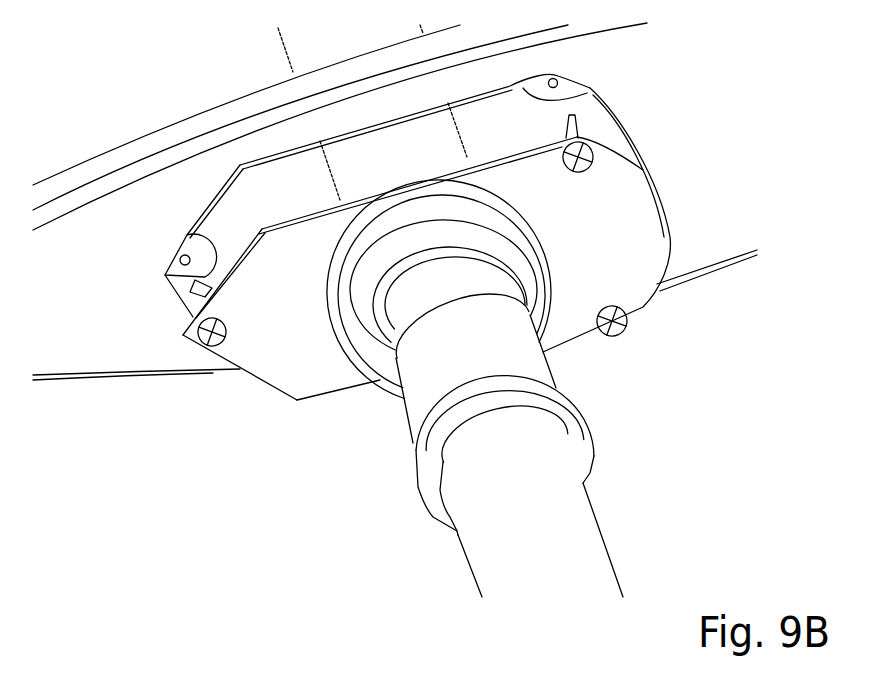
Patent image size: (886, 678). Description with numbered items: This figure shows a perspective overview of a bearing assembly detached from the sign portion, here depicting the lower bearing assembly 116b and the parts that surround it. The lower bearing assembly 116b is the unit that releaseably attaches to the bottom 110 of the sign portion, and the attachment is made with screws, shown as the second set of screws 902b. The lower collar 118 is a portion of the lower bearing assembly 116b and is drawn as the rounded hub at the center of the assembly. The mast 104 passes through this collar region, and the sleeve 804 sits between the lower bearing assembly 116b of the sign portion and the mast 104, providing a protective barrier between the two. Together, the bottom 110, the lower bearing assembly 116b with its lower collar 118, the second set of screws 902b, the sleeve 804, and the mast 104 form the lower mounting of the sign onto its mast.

The mast 104 is at (593, 520).
The bottom 110 is at (110, 370).
The lower bearing assembly 116b is at (654, 303).
The lower collar 118 is at (365, 348).
The sleeve 804 is at (425, 457).
The second set of screws 902b is at (573, 125).